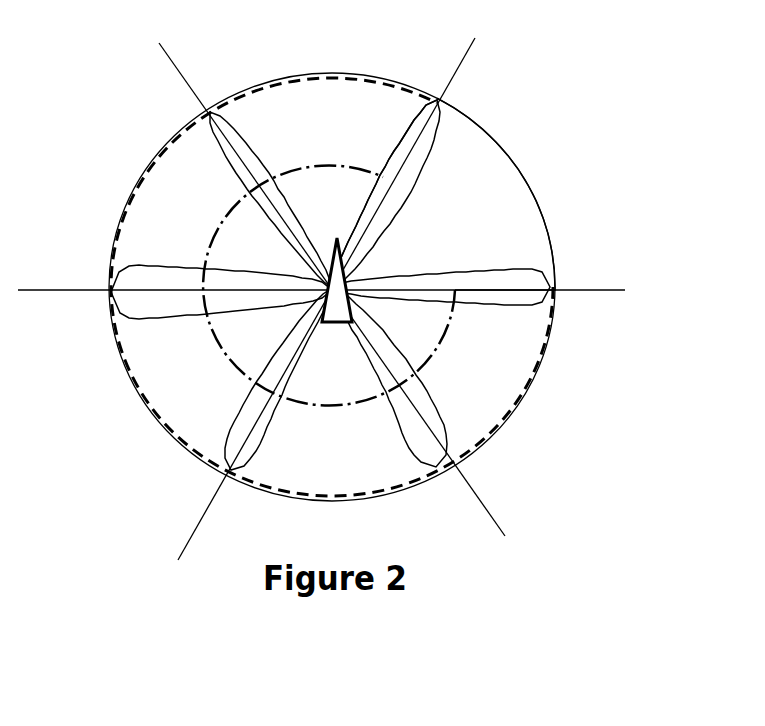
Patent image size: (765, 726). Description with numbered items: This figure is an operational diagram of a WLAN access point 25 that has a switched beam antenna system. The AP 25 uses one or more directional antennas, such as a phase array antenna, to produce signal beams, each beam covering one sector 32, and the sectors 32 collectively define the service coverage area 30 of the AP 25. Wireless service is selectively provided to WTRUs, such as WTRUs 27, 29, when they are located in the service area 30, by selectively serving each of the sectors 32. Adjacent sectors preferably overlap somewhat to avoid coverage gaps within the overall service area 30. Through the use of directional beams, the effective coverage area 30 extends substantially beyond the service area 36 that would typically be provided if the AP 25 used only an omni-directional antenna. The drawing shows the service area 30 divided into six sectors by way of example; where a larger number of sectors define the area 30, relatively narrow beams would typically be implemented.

The access point 25 is at (340, 310).
The WTRU 27 is at (497, 224).
The WTRU 29 is at (474, 300).
The service area 30 is at (329, 468).
The sector 32 is at (492, 180).
The service area 36 is at (270, 263).